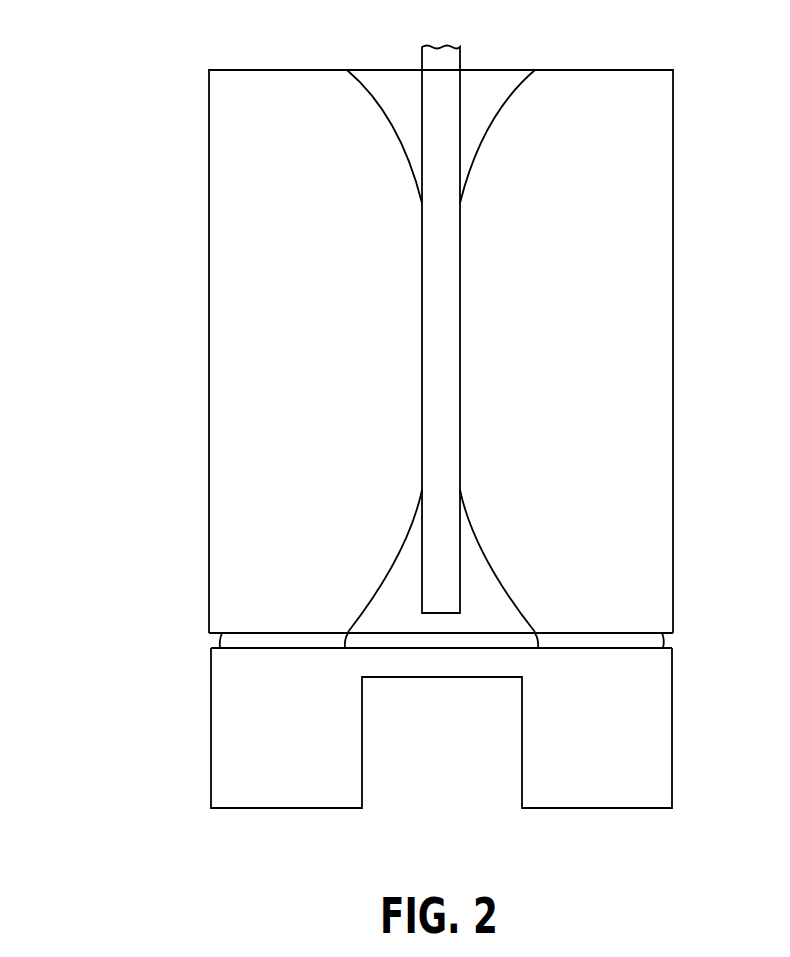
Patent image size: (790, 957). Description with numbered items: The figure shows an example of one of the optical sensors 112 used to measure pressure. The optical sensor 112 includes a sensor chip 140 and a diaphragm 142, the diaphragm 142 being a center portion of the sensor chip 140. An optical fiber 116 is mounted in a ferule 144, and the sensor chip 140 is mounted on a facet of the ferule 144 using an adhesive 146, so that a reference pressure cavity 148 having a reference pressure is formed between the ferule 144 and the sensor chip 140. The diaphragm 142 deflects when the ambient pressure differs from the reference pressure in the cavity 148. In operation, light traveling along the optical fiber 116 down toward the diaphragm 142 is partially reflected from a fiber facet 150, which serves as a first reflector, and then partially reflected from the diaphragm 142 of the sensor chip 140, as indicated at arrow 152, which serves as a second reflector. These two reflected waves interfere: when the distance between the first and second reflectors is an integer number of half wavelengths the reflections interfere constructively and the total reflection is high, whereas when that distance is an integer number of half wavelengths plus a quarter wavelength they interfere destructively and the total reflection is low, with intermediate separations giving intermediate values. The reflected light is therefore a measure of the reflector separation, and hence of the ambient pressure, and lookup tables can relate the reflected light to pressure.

The optical sensor 112 is at (168, 30).
The optical fiber 116 is at (430, 63).
The sensor chip 140 is at (238, 708).
The diaphragm 142 is at (438, 692).
The ferule 144 is at (246, 276).
The adhesive 146 is at (206, 636).
The reference pressure cavity 148 is at (377, 660).
The fiber facet 150 is at (409, 601).
The arrow 152 is at (423, 637).